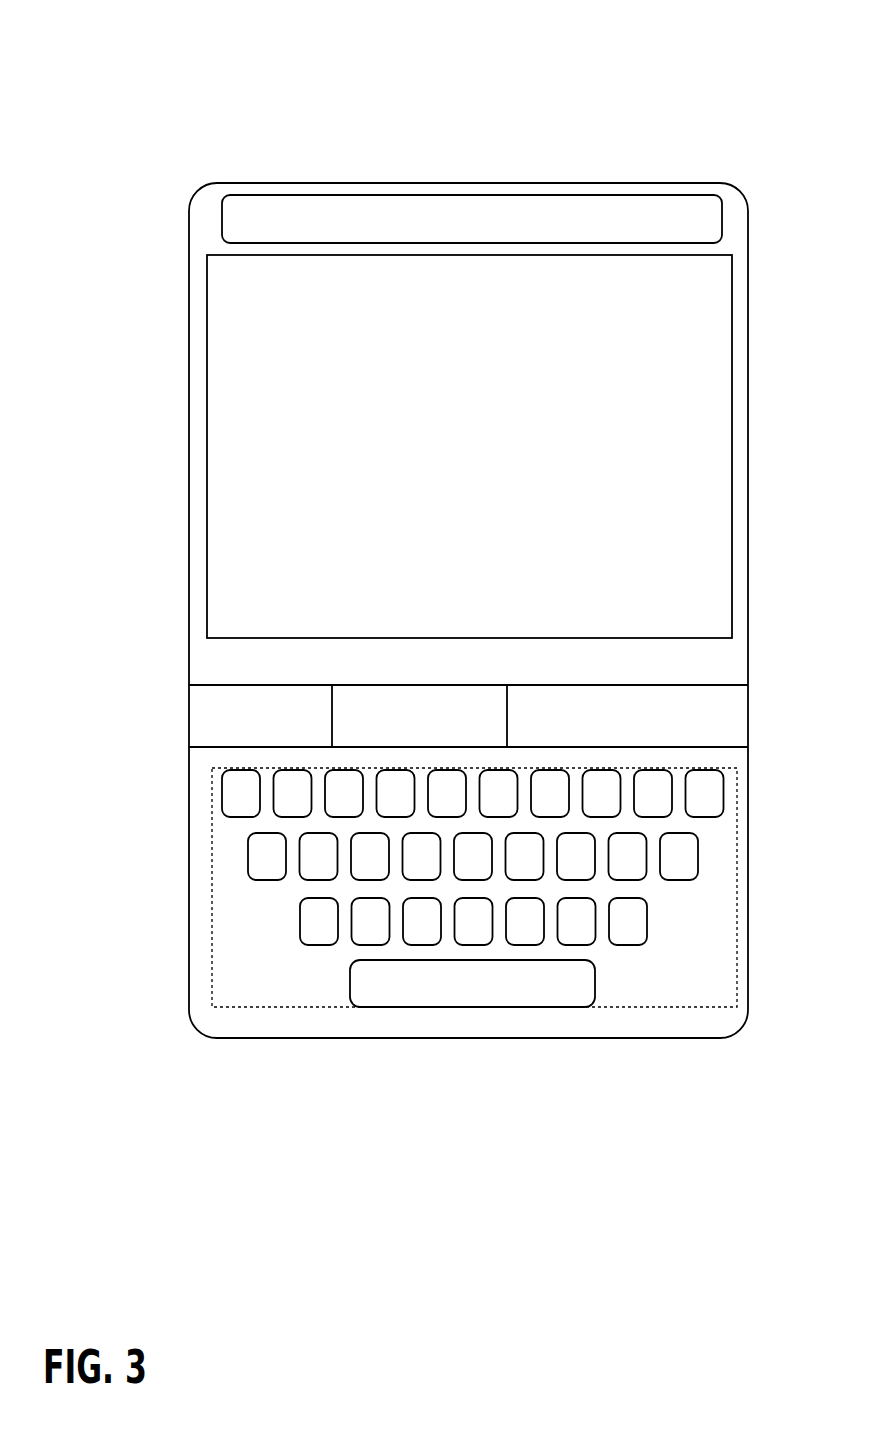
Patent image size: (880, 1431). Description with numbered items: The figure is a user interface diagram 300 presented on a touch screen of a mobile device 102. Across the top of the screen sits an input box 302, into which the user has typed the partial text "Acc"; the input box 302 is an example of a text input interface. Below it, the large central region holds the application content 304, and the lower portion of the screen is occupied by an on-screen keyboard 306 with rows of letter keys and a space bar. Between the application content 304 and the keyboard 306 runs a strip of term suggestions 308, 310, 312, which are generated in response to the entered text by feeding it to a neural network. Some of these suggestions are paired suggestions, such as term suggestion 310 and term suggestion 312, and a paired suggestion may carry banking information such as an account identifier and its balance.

The user interface of mobile device 300 is at (764, 62).
The mobile device 102 is at (468, 586).
The input box 302 is at (417, 216).
The application content 304 is at (414, 446).
The keyboard 306 is at (418, 887).
The term suggestion 308 is at (277, 699).
The term suggestion 310 is at (431, 699).
The term suggestion 312 is at (621, 689).